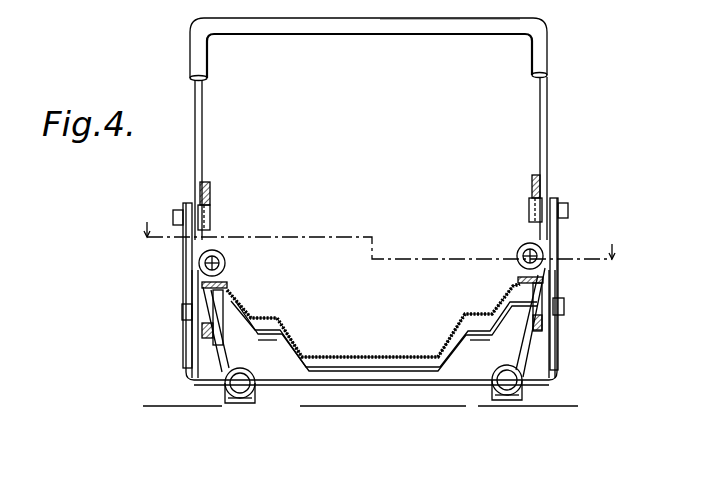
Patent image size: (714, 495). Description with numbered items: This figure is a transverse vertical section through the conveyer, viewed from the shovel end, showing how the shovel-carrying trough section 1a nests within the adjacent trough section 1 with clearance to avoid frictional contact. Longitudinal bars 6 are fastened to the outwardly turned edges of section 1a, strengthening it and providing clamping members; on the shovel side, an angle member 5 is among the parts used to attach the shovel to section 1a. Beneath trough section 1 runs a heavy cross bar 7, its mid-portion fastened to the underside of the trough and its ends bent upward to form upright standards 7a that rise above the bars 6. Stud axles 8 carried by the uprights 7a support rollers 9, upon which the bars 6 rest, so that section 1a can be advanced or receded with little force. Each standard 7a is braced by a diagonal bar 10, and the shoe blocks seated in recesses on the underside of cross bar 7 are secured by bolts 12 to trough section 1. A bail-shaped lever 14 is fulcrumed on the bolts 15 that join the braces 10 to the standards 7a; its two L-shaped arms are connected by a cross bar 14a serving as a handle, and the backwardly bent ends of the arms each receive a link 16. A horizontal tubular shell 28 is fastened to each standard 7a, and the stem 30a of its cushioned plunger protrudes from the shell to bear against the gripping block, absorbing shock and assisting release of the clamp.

The trough section 1 is at (298, 345).
The shovel-carrying trough section 1a is at (388, 356).
The angle member 5 is at (381, 231).
The longitudinal bar 6 is at (228, 286).
The cross bar 7 is at (384, 386).
The upright standard 7a is at (191, 338).
The stud axle 8 is at (182, 310).
The roller 9 is at (213, 296).
The diagonal brace bar 10 is at (216, 357).
The bolt 12 is at (240, 390).
The bail-shaped lever 14 is at (203, 131).
The cross bar handle 14a is at (402, 22).
The bolt 15 is at (211, 216).
The link 16 is at (211, 192).
The tubular shell 28 is at (226, 263).
The plunger stem 30a is at (190, 262).